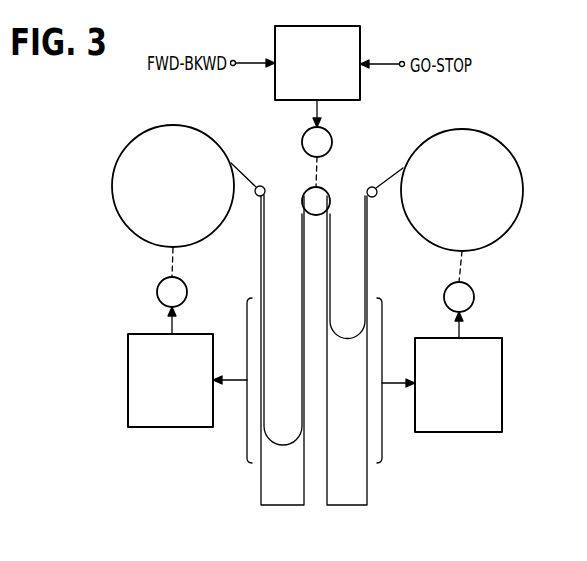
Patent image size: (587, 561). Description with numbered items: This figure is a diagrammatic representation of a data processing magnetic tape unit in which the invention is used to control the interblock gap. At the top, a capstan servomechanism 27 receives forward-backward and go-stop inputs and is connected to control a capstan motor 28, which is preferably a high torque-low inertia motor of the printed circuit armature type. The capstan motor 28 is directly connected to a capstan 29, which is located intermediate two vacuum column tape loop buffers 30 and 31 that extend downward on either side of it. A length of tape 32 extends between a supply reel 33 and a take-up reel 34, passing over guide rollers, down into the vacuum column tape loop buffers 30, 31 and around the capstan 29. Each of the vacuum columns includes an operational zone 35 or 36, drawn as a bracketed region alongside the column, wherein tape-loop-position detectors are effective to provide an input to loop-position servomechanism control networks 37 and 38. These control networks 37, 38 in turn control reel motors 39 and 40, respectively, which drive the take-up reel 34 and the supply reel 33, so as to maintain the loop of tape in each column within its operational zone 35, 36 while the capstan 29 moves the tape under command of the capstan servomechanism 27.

The capstan servomechanism 27 is at (361, 38).
The capstan motor 28 is at (333, 137).
The capstan 29 is at (325, 190).
The vacuum column tape loop buffer 30 is at (260, 494).
The vacuum column tape loop buffer 31 is at (368, 494).
The tape 32 is at (240, 168).
The supply reel 33 is at (522, 173).
The take-up reel 34 is at (114, 168).
The operational zone 35 is at (246, 313).
The operational zone 36 is at (384, 312).
The loop-position servomechanism control network 37 is at (127, 343).
The loop-position servomechanism control network 38 is at (503, 346).
The reel motor 39 is at (157, 290).
The reel motor 40 is at (474, 291).